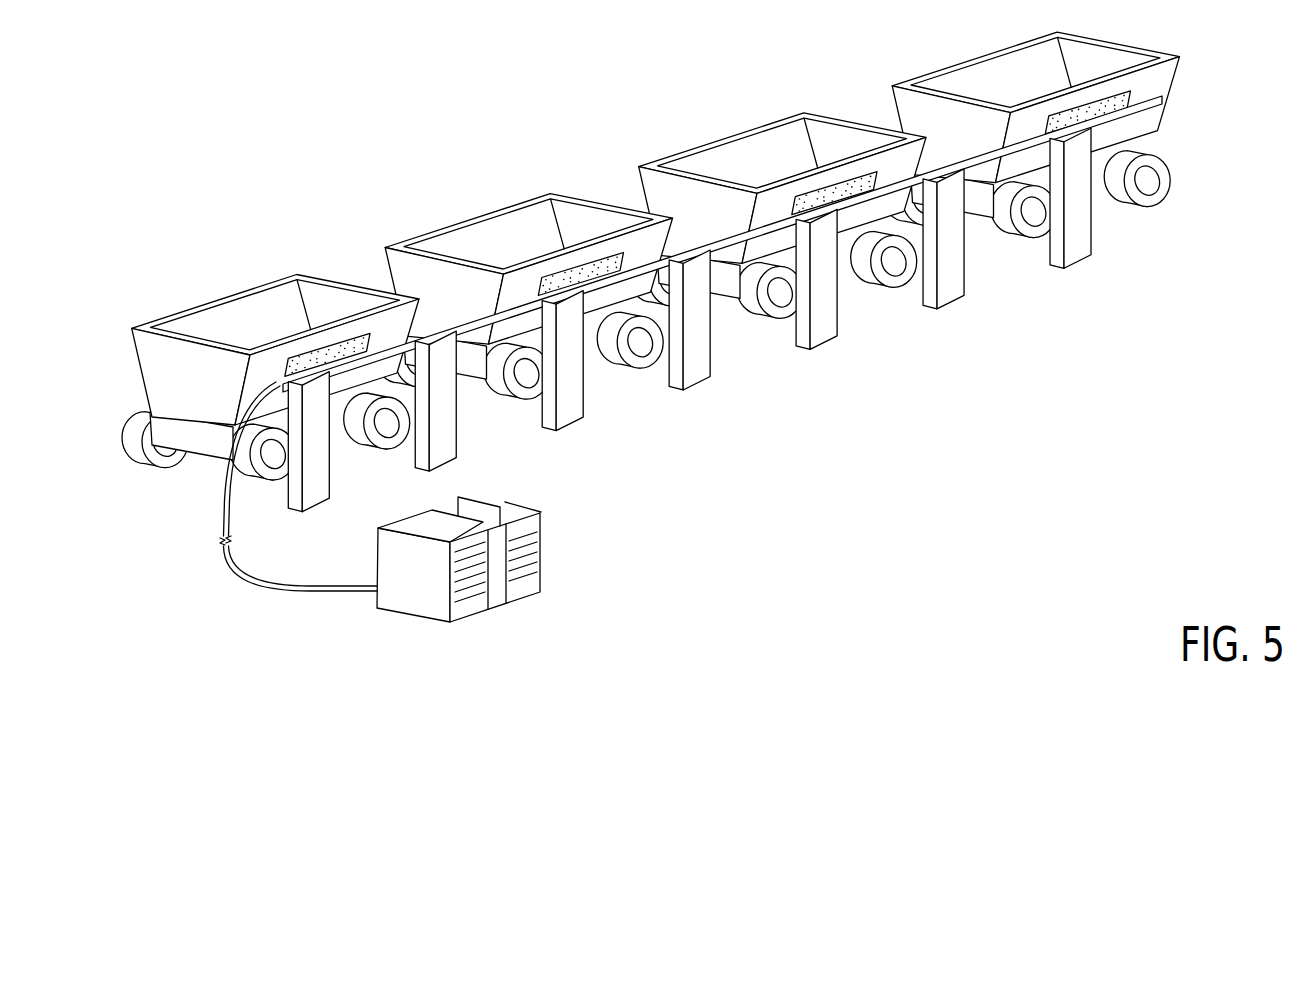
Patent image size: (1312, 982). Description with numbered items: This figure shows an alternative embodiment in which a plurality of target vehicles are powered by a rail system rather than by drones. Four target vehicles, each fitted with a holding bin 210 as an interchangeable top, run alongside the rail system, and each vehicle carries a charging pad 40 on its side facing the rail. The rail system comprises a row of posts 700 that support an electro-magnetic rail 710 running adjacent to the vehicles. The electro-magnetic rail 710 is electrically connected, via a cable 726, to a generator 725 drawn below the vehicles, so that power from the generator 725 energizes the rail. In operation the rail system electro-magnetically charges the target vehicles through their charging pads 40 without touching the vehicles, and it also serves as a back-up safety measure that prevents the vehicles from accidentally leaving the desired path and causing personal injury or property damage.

The charging pad 40 is at (575, 268).
The holding bin 210 is at (402, 265).
The posts 700 is at (1092, 228).
The electro-magnetic rail 710 is at (1000, 156).
The generator 725 is at (540, 552).
The cable 726 is at (228, 494).